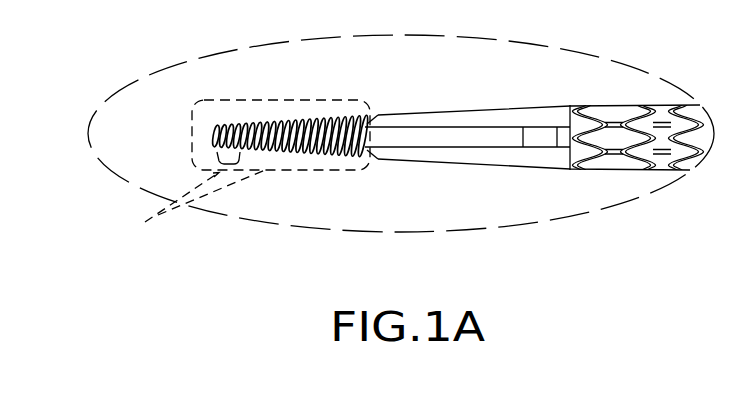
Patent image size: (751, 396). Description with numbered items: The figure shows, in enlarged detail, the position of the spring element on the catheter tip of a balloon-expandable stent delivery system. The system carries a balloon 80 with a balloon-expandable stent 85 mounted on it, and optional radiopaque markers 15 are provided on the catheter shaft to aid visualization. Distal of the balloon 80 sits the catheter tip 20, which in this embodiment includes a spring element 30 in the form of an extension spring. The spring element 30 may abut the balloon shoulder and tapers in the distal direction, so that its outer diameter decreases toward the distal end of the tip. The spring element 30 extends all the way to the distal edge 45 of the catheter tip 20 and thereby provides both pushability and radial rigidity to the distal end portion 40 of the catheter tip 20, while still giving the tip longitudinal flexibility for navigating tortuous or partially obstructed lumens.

The radiopaque markers 15 is at (538, 148).
The catheter tip 20 is at (156, 218).
The spring element 30 is at (310, 153).
The distal end portion 40 is at (229, 164).
The distal edge 45 is at (215, 137).
The balloon 80 is at (500, 109).
The balloon-expandable stent 85 is at (650, 140).